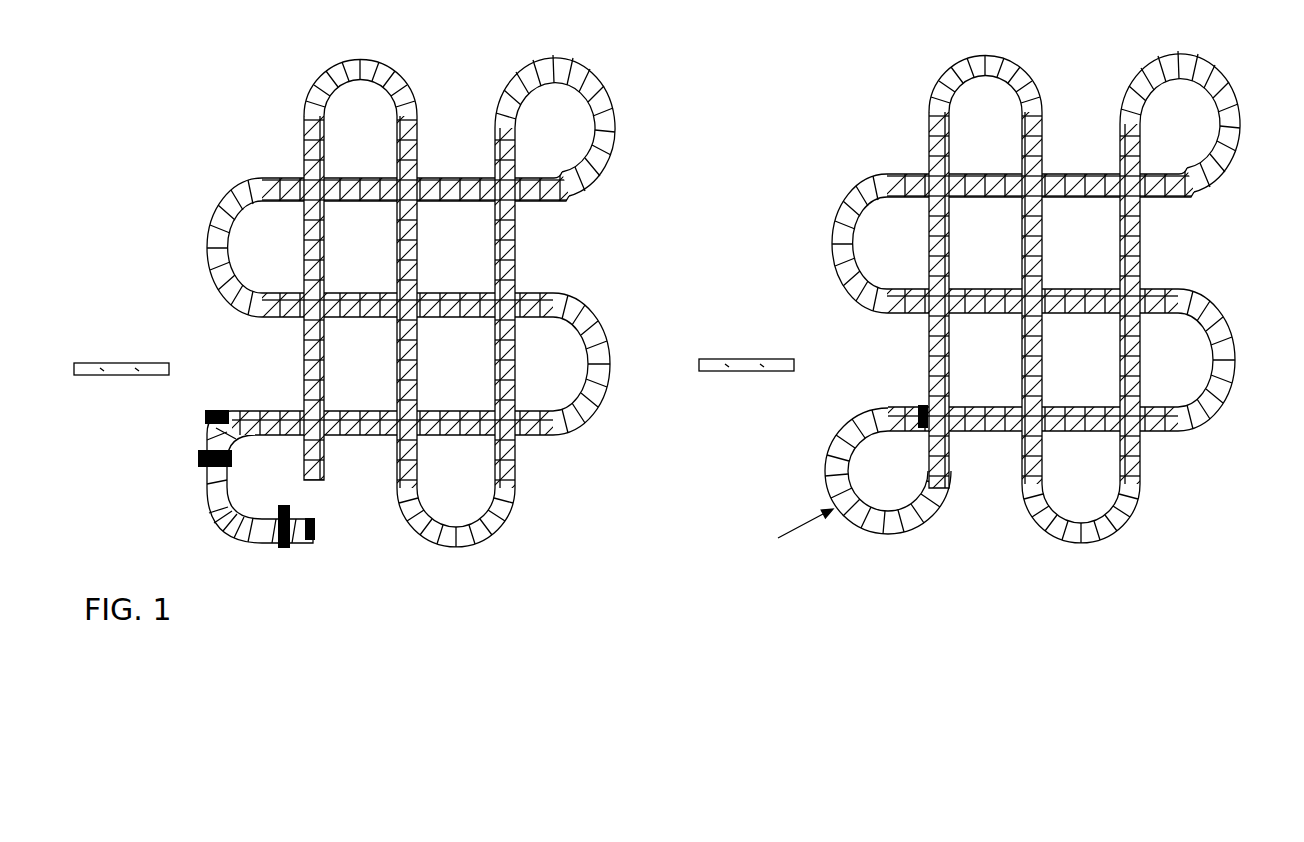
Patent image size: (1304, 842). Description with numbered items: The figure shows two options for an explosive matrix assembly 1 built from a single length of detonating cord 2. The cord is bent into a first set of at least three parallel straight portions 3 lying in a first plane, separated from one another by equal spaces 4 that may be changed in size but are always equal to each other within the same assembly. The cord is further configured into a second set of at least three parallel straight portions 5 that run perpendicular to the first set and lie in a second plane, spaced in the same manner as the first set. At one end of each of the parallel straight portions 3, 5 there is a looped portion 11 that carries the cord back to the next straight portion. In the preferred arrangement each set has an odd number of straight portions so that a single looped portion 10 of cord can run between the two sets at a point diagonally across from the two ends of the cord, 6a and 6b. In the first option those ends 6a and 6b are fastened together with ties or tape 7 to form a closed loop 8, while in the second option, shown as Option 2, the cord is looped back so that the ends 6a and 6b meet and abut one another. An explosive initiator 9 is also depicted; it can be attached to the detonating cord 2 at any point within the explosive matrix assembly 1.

The explosive matrix assembly 1 is at (433, 583).
The detonating cord 2 is at (603, 343).
The first set of parallel straight portions 3 is at (463, 410).
The equal spaces 4 is at (438, 394).
The second set of parallel straight portions 5 is at (328, 437).
The end of detonating cord 6a is at (296, 408).
The end of detonating cord 6b is at (318, 482).
The ties or tape 7 is at (240, 514).
The closed loop 8 is at (221, 501).
The explosive initiator 9 is at (148, 361).
The single looped portion 10 is at (597, 123).
The looped portion 11 is at (215, 255).